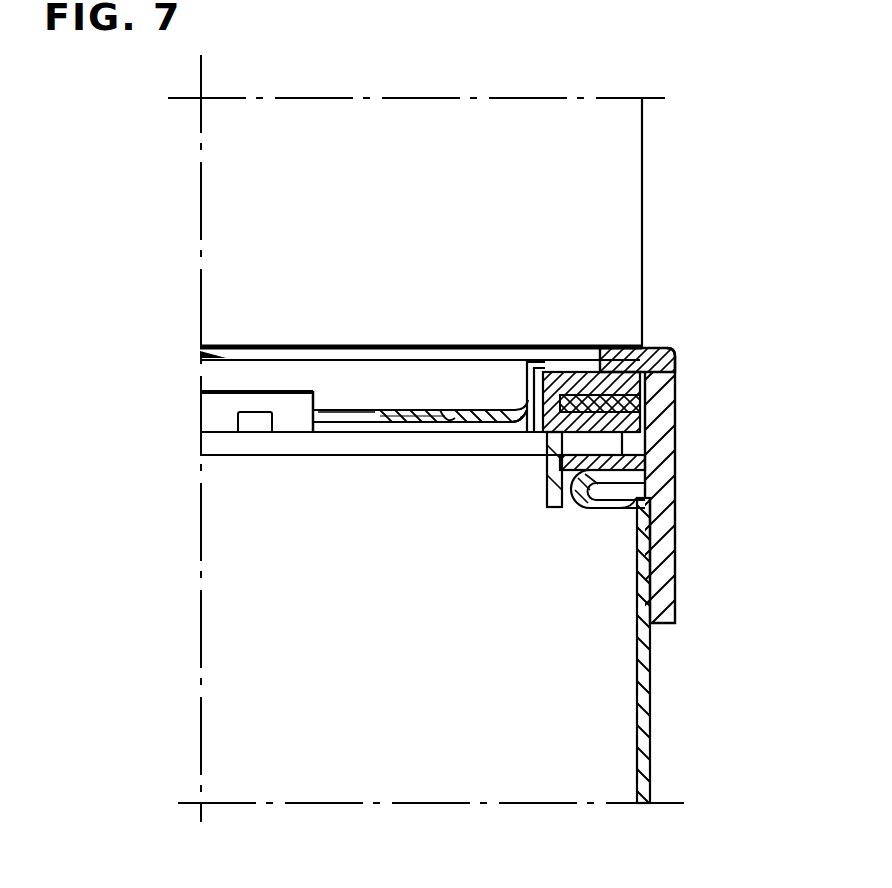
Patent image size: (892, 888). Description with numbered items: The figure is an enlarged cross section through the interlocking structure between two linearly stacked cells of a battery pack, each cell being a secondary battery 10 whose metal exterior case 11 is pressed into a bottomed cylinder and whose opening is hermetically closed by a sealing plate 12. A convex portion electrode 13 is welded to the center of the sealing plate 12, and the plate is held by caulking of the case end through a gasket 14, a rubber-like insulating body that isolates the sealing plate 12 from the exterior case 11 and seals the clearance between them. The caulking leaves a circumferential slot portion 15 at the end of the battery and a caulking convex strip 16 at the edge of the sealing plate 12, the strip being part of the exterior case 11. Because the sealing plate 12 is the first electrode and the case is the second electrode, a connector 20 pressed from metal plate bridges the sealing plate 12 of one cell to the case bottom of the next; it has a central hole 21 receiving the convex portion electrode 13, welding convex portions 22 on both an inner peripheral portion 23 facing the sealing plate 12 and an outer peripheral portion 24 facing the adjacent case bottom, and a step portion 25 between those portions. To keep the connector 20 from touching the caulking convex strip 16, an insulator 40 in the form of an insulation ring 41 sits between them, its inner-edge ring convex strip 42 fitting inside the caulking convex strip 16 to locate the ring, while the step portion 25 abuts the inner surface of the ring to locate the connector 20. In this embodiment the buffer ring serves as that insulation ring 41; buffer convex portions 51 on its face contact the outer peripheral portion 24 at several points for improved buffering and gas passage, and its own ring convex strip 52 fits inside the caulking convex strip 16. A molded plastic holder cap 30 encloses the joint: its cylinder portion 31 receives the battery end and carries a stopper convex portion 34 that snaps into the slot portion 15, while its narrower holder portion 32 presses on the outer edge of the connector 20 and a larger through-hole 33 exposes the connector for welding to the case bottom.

The secondary battery 10 is at (656, 142).
The exterior case 11 is at (314, 303).
The sealing plate 12 is at (304, 446).
The convex portion electrode 13 is at (200, 412).
The gasket 14 is at (650, 470).
The slot portion 15 is at (588, 506).
The caulking convex strip 16 is at (645, 428).
The connector 20 is at (460, 386).
The central hole 21 is at (364, 410).
The welding convex portions 22 is at (588, 370).
The inner peripheral portion 23 is at (385, 420).
The outer peripheral portion 24 is at (553, 370).
The step portion 25 is at (520, 405).
The holder cap 30 is at (684, 437).
The cylinder portion 31 is at (668, 597).
The holder portion 32 is at (640, 350).
The through-hole 33 is at (614, 348).
The stopper convex portion 34 is at (628, 500).
The insulator 40 is at (665, 356).
The insulation ring 41 is at (648, 400).
The ring convex strip 42 is at (519, 416).
The buffer convex portions 51 is at (575, 365).
The ring convex strip 52 is at (548, 400).